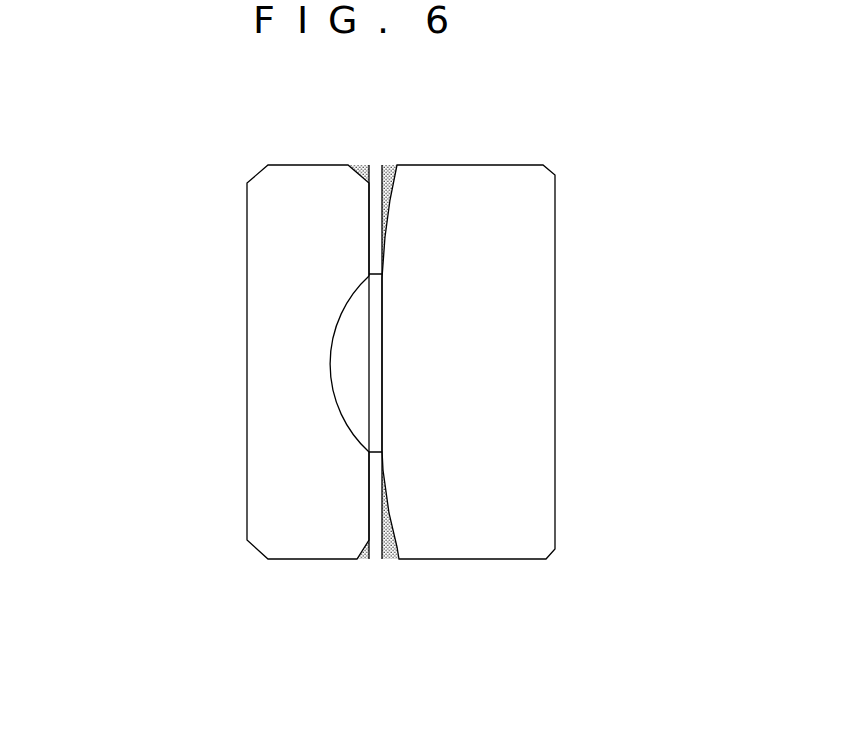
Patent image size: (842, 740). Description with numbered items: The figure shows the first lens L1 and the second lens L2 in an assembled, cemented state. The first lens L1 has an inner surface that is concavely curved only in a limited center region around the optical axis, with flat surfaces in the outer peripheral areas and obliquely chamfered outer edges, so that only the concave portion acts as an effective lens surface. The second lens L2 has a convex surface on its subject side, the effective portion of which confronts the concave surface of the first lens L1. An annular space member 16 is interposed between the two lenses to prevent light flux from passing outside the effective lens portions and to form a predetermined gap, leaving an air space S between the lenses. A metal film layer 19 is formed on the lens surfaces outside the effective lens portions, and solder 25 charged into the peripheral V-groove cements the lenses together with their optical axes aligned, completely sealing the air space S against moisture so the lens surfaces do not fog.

The first lens L1 is at (263, 407).
The second lens L2 is at (540, 394).
The air space S is at (340, 352).
The annular space member 16 is at (373, 215).
The solder 25 is at (392, 167).
The metal film layer 19 is at (398, 547).